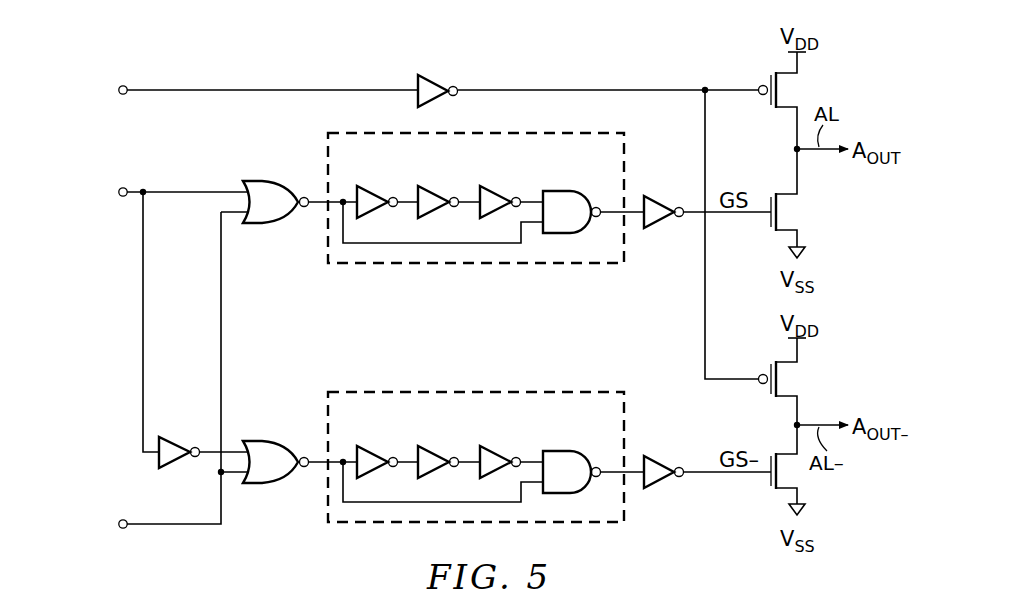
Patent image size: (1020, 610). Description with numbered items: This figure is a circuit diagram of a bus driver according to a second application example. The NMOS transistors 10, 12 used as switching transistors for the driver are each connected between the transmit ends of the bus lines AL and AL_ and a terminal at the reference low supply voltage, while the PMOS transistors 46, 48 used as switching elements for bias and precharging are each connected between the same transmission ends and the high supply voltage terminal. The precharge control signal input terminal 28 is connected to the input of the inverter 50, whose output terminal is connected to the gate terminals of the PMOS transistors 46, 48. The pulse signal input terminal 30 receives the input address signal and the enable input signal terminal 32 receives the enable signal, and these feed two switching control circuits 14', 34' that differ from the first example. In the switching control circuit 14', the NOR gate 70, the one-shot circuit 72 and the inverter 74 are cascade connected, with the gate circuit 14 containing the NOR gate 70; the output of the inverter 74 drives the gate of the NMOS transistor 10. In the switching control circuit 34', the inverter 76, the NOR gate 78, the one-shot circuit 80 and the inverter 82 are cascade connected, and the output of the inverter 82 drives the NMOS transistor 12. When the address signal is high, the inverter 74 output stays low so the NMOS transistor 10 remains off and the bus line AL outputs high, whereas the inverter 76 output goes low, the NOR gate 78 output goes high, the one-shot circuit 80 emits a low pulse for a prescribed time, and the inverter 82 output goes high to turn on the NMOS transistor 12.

The precharge control signal input terminal 28 is at (122, 85).
The pulse signal input terminal 30 is at (123, 198).
The enable input signal terminal 32 is at (123, 529).
The inverter 50 is at (440, 79).
The NOR gate 70 is at (272, 181).
The first gate circuit 14 is at (276, 208).
The switching control circuit 14' is at (481, 225).
The one-shot circuit 72 is at (463, 265).
The inverter 74 is at (665, 197).
The PMOS transistor 46 is at (762, 82).
The NMOS transistor 10 is at (768, 222).
The inverter 76 is at (180, 468).
The NOR gate 78 is at (275, 484).
The one-shot circuit 80 is at (465, 391).
The switching control circuit 34' is at (481, 455).
The inverter 82 is at (665, 457).
The PMOS transistor 48 is at (762, 371).
The NMOS transistor 12 is at (768, 482).